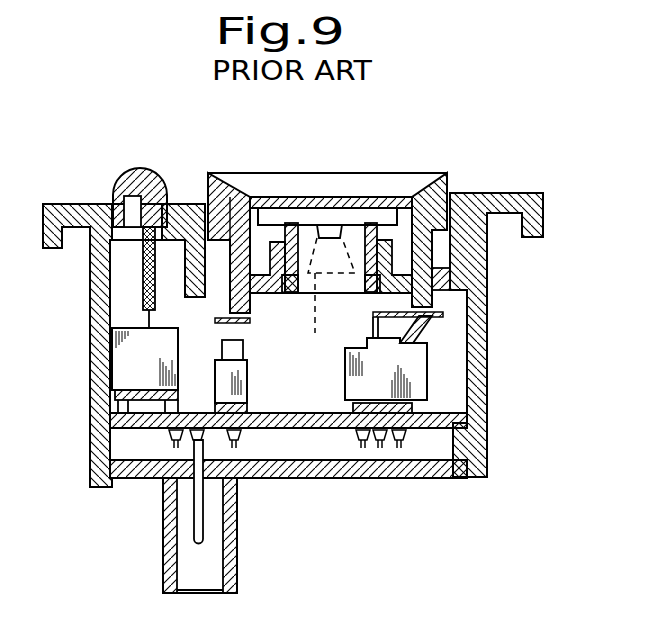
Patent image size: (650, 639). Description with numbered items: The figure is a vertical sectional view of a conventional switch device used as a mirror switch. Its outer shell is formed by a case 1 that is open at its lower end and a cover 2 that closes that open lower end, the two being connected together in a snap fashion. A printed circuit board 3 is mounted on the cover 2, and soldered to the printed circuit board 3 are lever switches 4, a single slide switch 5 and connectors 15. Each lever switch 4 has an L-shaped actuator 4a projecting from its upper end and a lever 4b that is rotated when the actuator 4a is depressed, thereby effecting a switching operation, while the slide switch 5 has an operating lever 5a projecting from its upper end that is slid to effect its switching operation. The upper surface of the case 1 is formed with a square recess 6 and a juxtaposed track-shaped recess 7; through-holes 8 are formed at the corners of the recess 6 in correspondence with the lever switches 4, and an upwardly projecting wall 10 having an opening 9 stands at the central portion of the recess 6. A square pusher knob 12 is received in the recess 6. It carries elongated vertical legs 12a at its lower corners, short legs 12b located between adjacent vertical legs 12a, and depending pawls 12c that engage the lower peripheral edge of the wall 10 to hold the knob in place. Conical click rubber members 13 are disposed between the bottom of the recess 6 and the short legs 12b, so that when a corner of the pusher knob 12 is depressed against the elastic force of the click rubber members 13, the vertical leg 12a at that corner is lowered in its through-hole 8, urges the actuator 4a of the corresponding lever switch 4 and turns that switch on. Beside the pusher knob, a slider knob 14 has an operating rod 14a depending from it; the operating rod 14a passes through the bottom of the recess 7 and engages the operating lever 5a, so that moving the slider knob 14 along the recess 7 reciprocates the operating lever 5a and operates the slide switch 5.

The case 1 is at (90, 320).
The cover 2 is at (343, 478).
The printed circuit board 3 is at (450, 407).
The lever switch 4 is at (413, 378).
The L-shaped actuator 4a is at (443, 314).
The lever 4b is at (430, 338).
The slide switch 5 is at (123, 375).
The operating lever 5a is at (140, 320).
The recess 6 is at (440, 257).
The recess 7 is at (163, 210).
The through-hole 8 is at (443, 277).
The opening 9 is at (357, 255).
The upwardly projecting wall 10 is at (387, 238).
The pusher knob 12 is at (356, 228).
The elongated vertical leg 12a is at (448, 192).
The short leg 12b is at (313, 222).
The pawl 12c is at (293, 298).
The click rubber member 13 is at (325, 300).
The slider knob 14 is at (144, 168).
The operating rod 14a is at (140, 275).
The connector 15 is at (190, 407).